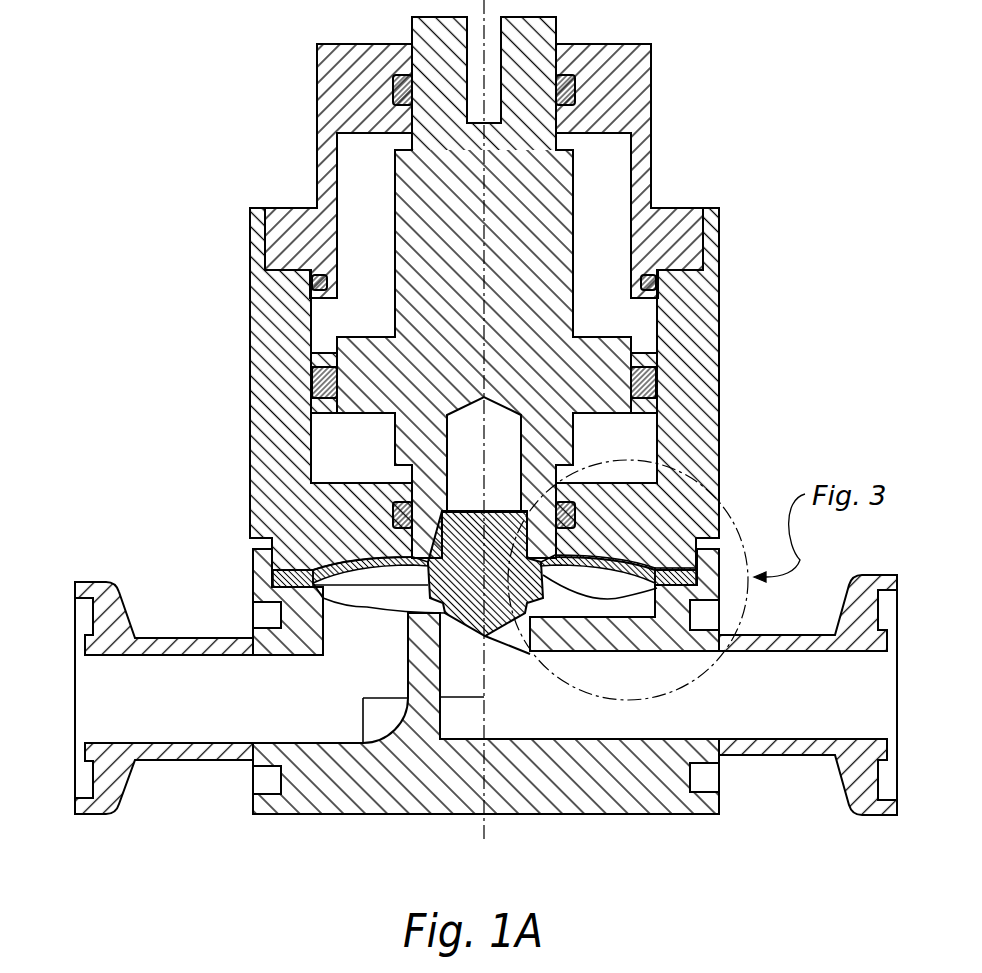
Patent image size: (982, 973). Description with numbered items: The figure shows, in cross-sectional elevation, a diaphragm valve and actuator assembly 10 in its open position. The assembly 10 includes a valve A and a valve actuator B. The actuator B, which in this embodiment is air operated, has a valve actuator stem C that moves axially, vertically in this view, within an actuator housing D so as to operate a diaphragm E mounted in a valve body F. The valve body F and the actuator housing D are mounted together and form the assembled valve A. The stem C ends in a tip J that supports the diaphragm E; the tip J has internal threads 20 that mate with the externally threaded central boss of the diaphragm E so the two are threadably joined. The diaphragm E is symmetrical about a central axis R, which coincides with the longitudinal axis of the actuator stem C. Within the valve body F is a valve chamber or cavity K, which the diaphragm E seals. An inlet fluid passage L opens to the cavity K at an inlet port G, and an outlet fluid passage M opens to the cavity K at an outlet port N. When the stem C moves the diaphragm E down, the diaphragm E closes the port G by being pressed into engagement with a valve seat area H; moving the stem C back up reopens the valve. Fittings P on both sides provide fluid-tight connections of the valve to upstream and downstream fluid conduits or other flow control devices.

The diaphragm valve and actuator assembly 10 is at (222, 357).
The internal threads 20 is at (463, 505).
The valve A is at (222, 830).
The valve actuator B is at (690, 141).
The valve actuator stem C is at (385, 441).
The actuator housing D is at (730, 334).
The diaphragm E is at (606, 547).
The valve body F is at (612, 827).
The inlet port G is at (453, 628).
The valve seat area H is at (563, 599).
The tip J is at (402, 535).
The valve chamber or cavity K is at (396, 614).
The inlet fluid passage L is at (541, 719).
The outlet fluid passage M is at (313, 718).
The outlet port N is at (358, 616).
The fittings P is at (176, 624).
The central axis R is at (485, 828).